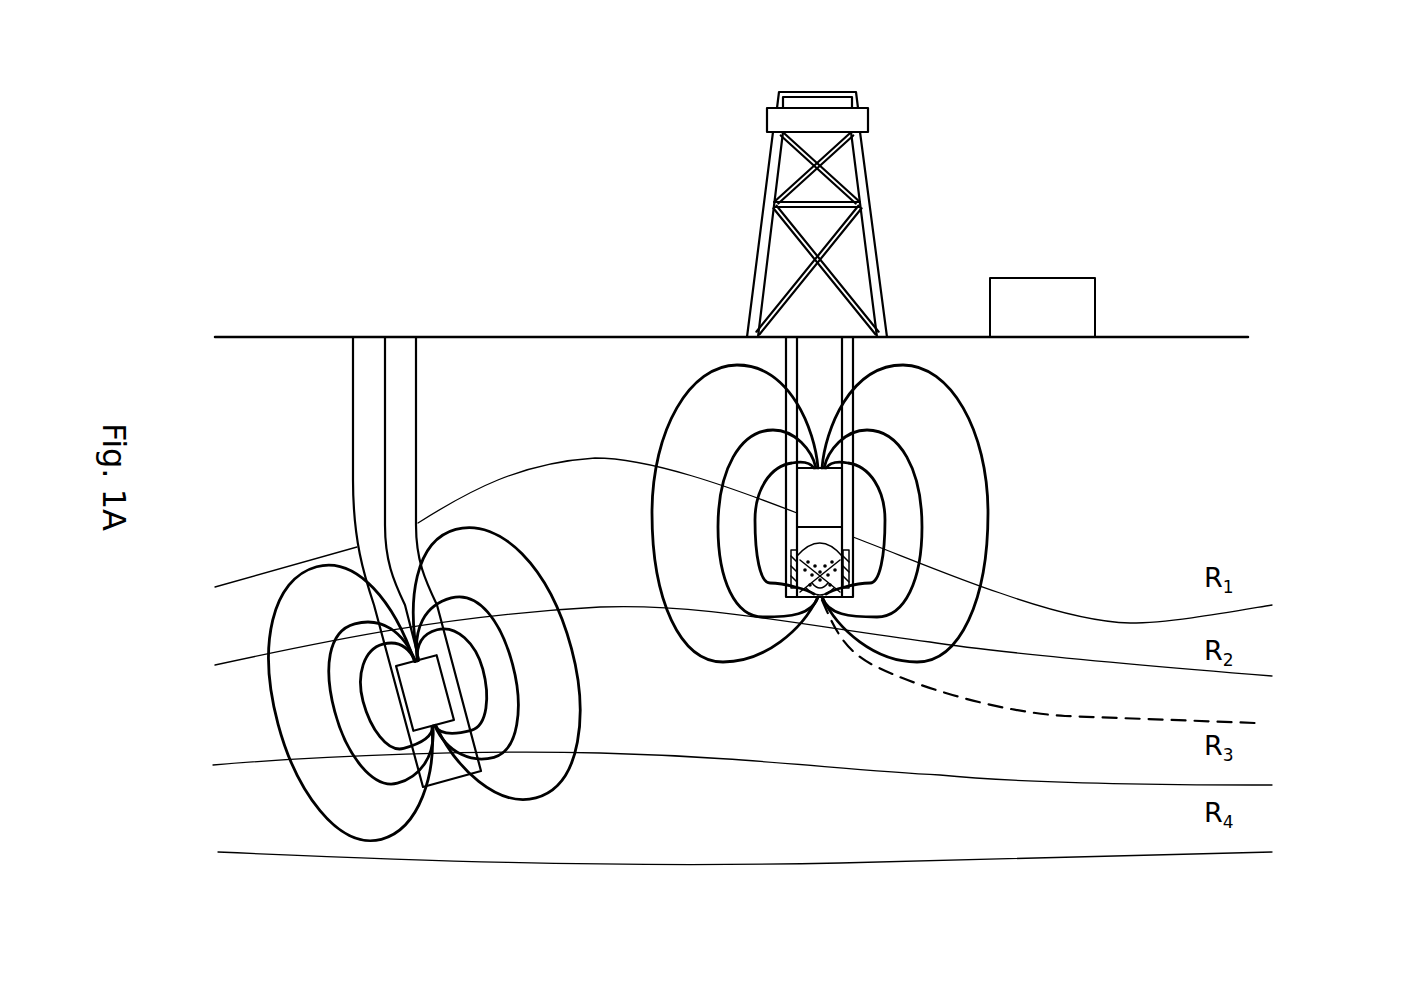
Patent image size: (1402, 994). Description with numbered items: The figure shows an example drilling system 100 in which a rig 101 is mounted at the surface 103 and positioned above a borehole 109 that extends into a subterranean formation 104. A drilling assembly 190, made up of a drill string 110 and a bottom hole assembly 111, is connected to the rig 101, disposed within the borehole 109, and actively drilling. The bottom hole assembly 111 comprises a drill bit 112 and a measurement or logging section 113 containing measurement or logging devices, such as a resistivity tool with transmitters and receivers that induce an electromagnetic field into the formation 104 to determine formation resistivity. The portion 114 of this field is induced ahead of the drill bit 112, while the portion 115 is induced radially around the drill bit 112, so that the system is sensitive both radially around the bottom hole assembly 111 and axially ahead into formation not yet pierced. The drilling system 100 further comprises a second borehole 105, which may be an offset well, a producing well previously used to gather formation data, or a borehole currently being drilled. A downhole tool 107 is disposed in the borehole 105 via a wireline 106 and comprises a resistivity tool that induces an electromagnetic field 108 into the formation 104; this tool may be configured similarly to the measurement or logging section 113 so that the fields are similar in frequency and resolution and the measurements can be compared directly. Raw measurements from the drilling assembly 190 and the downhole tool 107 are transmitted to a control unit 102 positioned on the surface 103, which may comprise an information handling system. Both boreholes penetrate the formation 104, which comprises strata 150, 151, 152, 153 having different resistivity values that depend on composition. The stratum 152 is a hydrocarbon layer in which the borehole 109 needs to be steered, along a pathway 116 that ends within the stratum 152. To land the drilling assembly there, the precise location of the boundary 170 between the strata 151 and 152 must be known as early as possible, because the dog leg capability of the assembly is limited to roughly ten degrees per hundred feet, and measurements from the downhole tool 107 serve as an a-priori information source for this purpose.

The drilling system 100 is at (1088, 140).
The rig 101 is at (867, 158).
The control unit 102 is at (1042, 307).
The surface 103 is at (1130, 337).
The subterranean formation 104 is at (1066, 468).
The borehole 105 is at (417, 410).
The wireline 106 is at (385, 493).
The downhole tool 107 is at (403, 687).
The electromagnetic field 108 is at (307, 800).
The borehole 109 is at (855, 365).
The drill string 110 is at (797, 372).
The bottom hole assembly 111 is at (847, 517).
The drill bit 112 is at (795, 572).
The measurement or logging section 113 is at (797, 513).
The portion of electromagnetic field 114 is at (850, 620).
The portion of electromagnetic field 115 is at (987, 528).
The pathway 116 is at (1065, 716).
The stratum 150 is at (1267, 517).
The stratum 151 is at (1267, 637).
The stratum 152 is at (1267, 740).
The stratum 153 is at (1267, 815).
The boundary 170 is at (613, 600).
The drilling assembly 190 is at (860, 509).